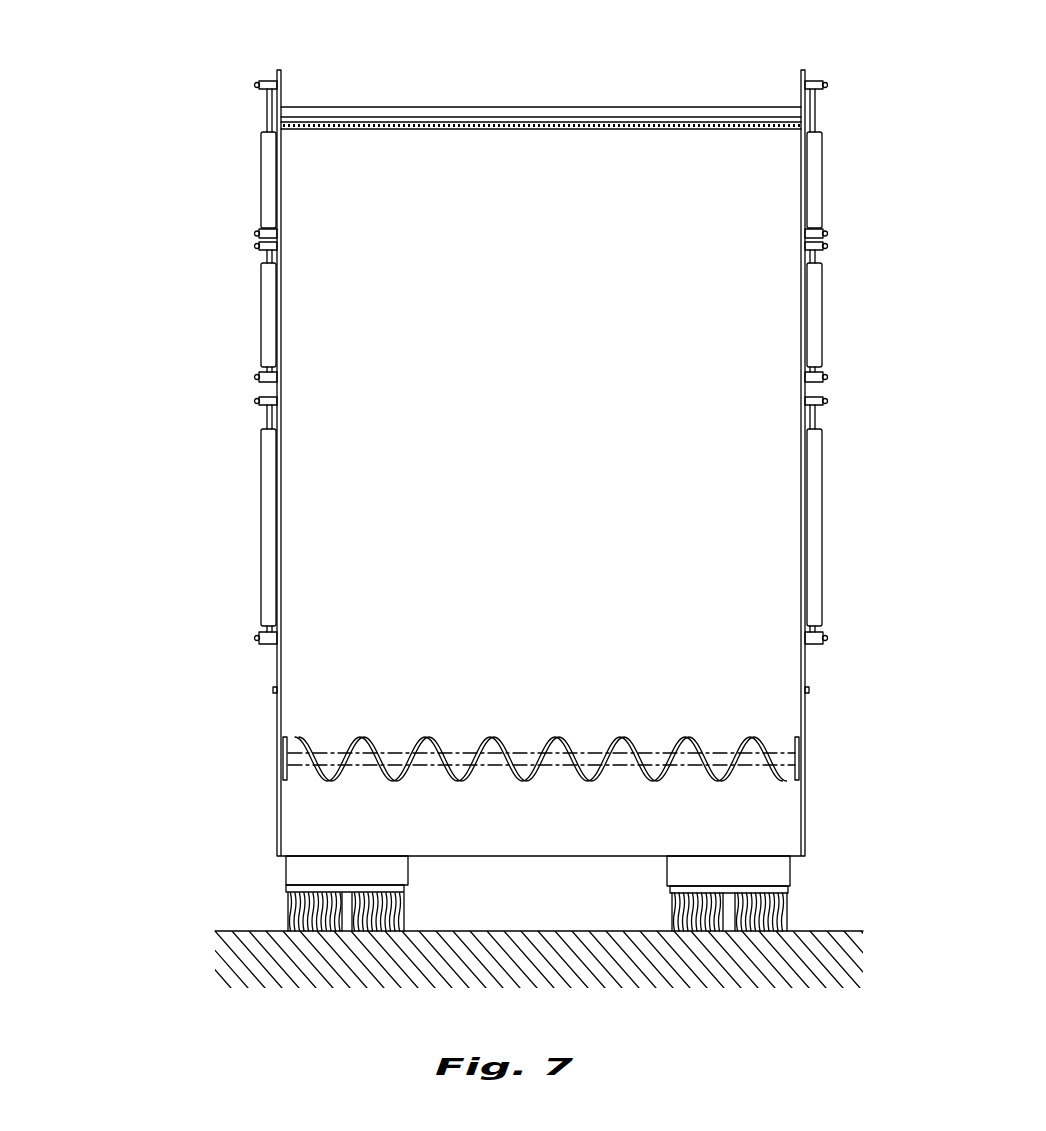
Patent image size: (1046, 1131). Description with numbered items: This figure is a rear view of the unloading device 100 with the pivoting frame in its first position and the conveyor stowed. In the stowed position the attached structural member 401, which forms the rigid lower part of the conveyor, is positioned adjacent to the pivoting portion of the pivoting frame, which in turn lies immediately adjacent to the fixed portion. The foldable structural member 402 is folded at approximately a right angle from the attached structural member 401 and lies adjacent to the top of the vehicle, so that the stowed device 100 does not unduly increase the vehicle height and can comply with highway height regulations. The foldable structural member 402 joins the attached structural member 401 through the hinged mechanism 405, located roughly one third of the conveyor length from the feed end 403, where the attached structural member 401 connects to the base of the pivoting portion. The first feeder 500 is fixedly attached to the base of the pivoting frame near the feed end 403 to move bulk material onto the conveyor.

The unloading device 100 is at (165, 190).
The attached structural member 401 is at (568, 368).
The foldable structural member 402 is at (606, 108).
The hinged mechanism 405 is at (320, 127).
The feed end 403 is at (813, 843).
The first feeder 500 is at (300, 758).